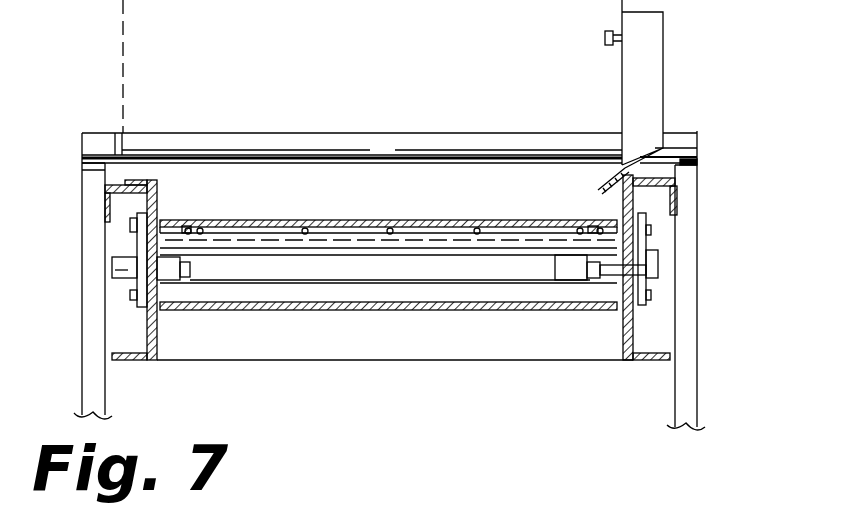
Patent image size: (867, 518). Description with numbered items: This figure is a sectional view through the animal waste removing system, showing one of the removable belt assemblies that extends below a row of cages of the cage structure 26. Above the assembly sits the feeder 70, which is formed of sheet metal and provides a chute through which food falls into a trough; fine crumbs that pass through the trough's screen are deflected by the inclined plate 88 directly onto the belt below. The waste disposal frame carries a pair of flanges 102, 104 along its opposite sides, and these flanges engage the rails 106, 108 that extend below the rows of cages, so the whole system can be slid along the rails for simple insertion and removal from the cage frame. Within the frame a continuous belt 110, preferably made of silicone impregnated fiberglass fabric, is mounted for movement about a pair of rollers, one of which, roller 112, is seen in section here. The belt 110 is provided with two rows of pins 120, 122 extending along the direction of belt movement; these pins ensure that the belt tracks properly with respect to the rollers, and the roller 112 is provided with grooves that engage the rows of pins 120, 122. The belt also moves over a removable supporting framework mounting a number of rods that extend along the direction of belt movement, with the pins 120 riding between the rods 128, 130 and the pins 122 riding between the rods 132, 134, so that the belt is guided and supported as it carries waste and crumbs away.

The housing 26 is at (378, 58).
The feeder 70 is at (666, 73).
The inclined plate 88 is at (603, 188).
The flange 102 is at (655, 175).
The flange 104 is at (155, 180).
The rail 106 is at (675, 202).
The rail 108 is at (118, 178).
The continuous belt 110 is at (265, 222).
The roller 112 is at (352, 273).
The pins 120 is at (218, 200).
The pins 122 is at (593, 223).
The rod 128 is at (193, 240).
The rod 130 is at (218, 240).
The rod 132 is at (563, 237).
The rod 134 is at (612, 237).